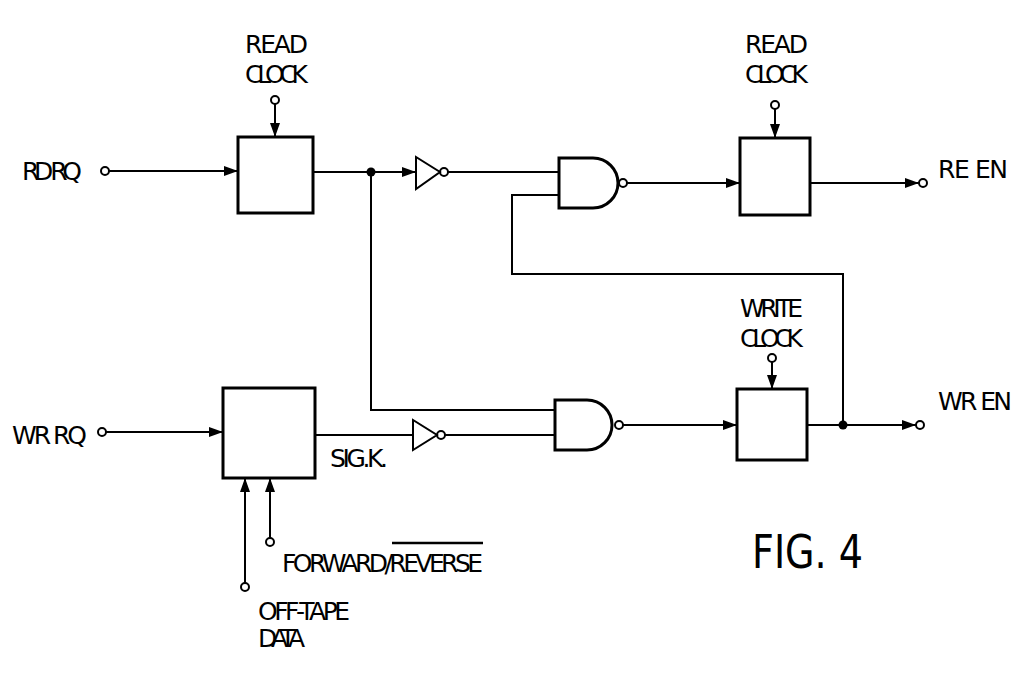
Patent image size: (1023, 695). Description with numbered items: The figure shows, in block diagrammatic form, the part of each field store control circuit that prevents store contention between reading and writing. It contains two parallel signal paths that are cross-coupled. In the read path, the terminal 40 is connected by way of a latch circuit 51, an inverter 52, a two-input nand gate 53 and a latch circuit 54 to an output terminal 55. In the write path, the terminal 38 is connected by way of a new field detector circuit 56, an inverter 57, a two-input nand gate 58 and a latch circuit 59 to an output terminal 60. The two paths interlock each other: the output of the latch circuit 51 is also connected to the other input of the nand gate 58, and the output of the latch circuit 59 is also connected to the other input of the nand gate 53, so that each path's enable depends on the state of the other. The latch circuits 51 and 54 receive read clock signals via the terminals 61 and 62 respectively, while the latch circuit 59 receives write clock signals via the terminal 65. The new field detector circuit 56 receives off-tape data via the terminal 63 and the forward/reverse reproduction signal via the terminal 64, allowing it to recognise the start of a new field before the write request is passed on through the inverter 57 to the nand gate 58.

The terminal 38 is at (102, 436).
The terminal 40 is at (105, 176).
The latch circuit 51 is at (265, 205).
The inverter 52 is at (428, 189).
The two-input nand gate 53 is at (588, 208).
The latch circuit 54 is at (790, 215).
The output terminal 55 is at (920, 188).
The new field detector circuit 56 is at (223, 463).
The inverter 57 is at (422, 451).
The two-input nand gate 58 is at (565, 450).
The latch circuit 59 is at (760, 460).
The output terminal 60 is at (920, 429).
The terminal 61 is at (271, 103).
The terminal 62 is at (771, 108).
The terminal 63 is at (241, 588).
The terminal 64 is at (274, 541).
The terminal 65 is at (768, 358).